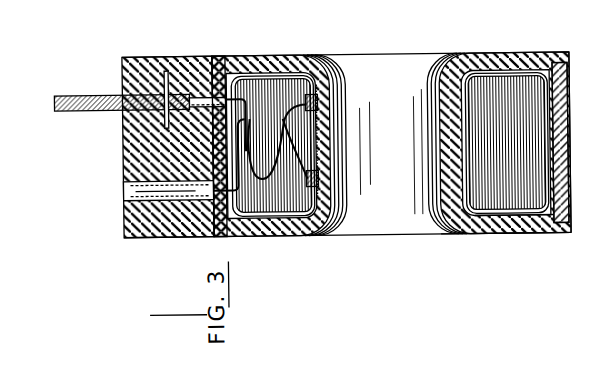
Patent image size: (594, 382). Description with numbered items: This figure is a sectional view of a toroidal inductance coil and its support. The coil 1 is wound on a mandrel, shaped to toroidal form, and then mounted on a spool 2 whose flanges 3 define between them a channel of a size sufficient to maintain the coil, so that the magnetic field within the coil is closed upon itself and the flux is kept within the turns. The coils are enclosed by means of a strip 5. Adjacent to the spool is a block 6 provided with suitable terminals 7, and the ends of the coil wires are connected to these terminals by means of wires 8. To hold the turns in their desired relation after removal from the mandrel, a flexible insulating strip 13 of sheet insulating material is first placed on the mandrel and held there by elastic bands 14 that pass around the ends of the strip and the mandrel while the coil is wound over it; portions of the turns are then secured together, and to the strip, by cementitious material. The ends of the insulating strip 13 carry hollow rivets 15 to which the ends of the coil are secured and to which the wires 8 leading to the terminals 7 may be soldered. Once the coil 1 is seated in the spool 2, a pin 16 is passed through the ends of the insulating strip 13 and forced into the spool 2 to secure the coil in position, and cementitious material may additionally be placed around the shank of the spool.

The coil 1 is at (270, 214).
The spool 2 is at (298, 235).
The flanges 3 is at (278, 54).
The strip 5 is at (569, 153).
The block 6 is at (165, 235).
The terminals 7 is at (118, 107).
The wires 8 is at (237, 235).
The insulating strip 13 is at (470, 170).
The elastic bands 14 is at (543, 231).
The hollow rivets 15 is at (318, 105).
The pin 16 is at (310, 149).